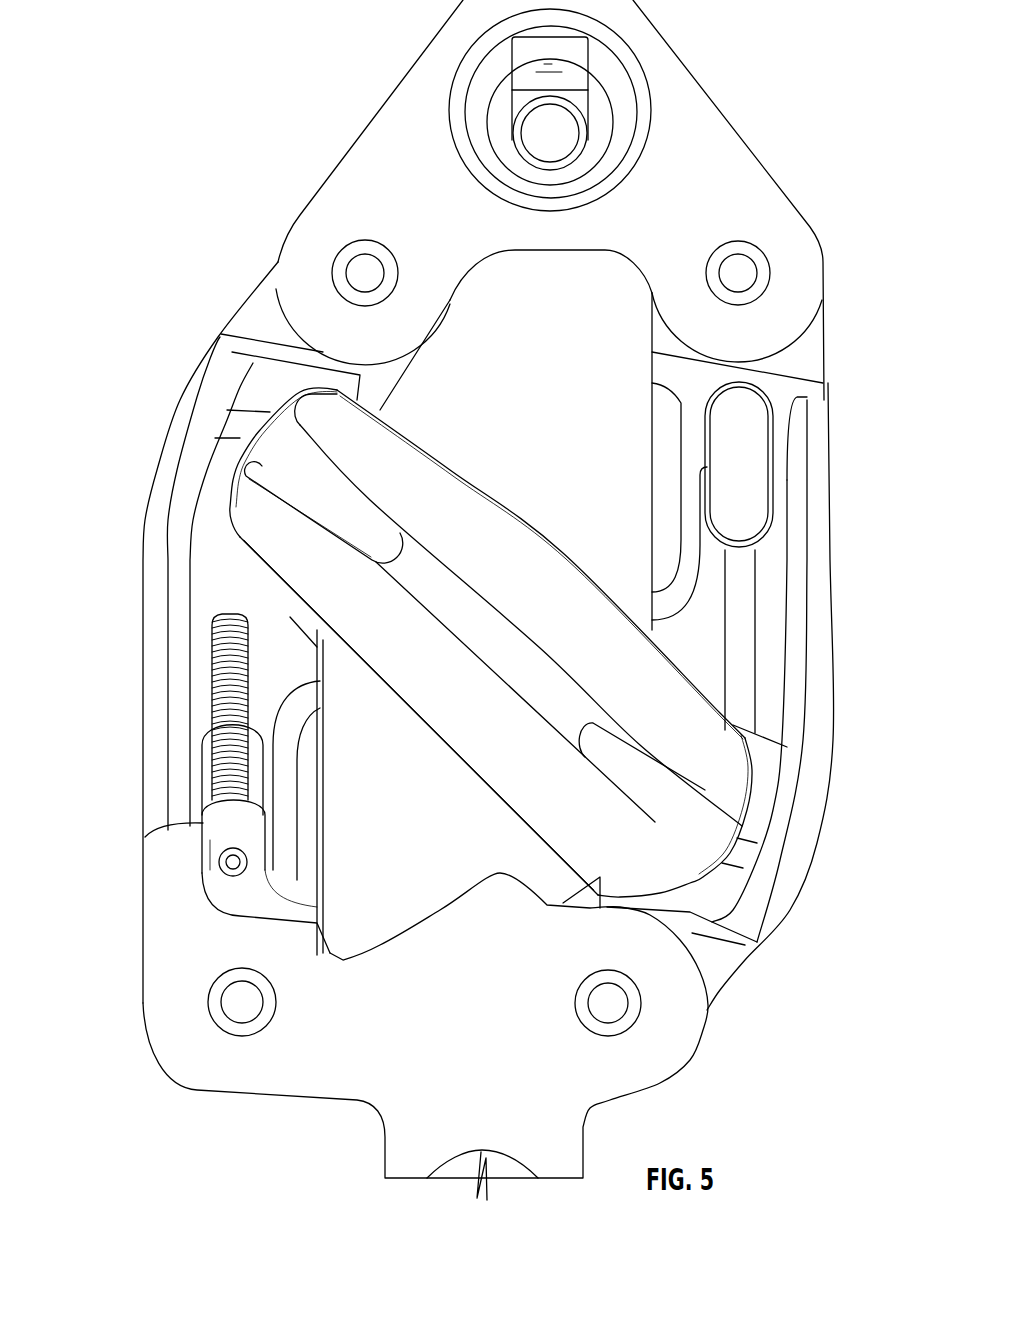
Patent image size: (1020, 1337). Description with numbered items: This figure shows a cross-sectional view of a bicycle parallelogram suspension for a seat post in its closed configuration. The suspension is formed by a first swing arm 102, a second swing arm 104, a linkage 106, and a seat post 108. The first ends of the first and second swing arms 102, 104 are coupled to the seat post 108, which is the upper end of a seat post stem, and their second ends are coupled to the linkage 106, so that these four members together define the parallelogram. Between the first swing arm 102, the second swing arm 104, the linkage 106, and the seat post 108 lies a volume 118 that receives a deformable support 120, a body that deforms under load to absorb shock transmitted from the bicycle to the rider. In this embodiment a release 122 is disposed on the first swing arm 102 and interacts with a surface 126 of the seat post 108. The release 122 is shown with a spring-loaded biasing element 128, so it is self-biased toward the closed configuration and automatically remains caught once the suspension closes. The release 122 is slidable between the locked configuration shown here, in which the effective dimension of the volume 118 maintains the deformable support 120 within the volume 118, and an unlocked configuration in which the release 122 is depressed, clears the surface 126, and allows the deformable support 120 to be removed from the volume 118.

The first swing arm 102 is at (143, 707).
The second swing arm 104 is at (803, 876).
The linkage 106 is at (738, 149).
The seat post 108 is at (190, 1086).
The volume 118 is at (628, 533).
The deformable support 120 is at (740, 774).
The release 122 is at (230, 822).
The surface 126 is at (203, 893).
The spring-loaded biasing element 128 is at (213, 693).